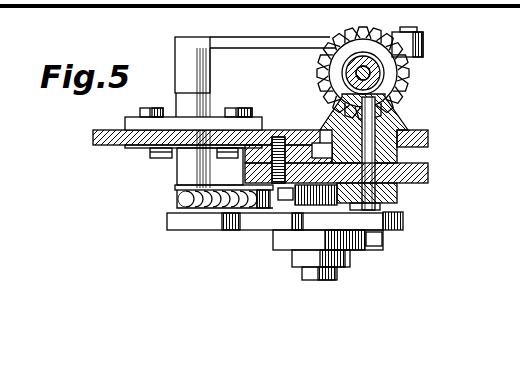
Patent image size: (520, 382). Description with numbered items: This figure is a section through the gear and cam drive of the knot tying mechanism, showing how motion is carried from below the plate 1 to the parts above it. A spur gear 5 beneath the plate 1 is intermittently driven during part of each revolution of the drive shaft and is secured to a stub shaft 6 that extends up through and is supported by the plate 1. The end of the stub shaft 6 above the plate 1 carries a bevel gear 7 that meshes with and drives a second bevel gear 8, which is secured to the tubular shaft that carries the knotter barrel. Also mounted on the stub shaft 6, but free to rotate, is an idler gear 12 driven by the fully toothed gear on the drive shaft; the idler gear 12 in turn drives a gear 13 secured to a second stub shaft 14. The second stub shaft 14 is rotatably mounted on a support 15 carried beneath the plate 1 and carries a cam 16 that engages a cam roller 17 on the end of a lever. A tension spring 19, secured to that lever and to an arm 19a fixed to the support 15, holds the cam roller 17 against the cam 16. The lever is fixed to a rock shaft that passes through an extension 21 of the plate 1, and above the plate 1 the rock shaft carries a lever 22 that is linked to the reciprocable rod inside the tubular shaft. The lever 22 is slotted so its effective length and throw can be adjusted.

The plate 1 is at (105, 131).
The spur gear 5 is at (398, 153).
The stub shaft 6 is at (331, 113).
The bevel gear 7 is at (397, 118).
The second bevel gear 8 is at (320, 60).
The idler gear 12 is at (398, 192).
The gear 13 is at (290, 205).
The second stub shaft 14 is at (338, 277).
The support 15 is at (430, 175).
The cam 16 is at (219, 229).
The cam roller 17 is at (404, 222).
The tension spring 19 is at (186, 198).
The arm 19a is at (185, 186).
The extension 21 is at (172, 119).
The lever 22 is at (287, 42).